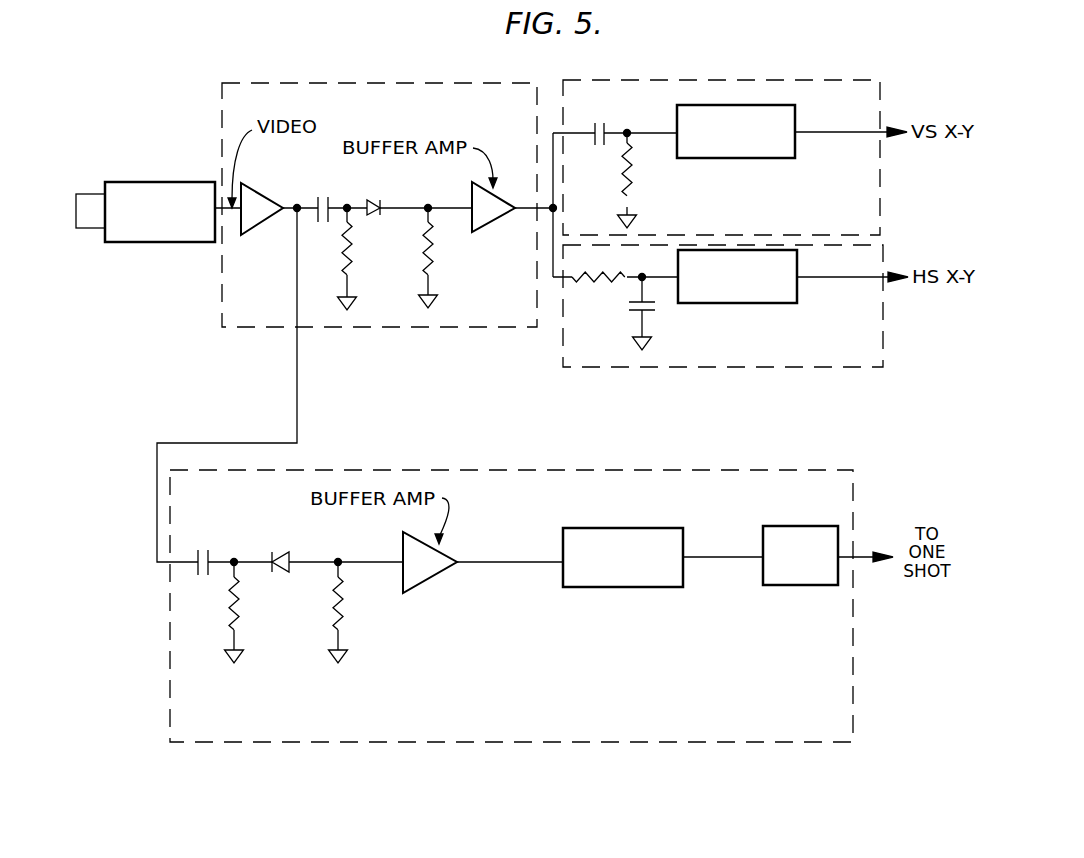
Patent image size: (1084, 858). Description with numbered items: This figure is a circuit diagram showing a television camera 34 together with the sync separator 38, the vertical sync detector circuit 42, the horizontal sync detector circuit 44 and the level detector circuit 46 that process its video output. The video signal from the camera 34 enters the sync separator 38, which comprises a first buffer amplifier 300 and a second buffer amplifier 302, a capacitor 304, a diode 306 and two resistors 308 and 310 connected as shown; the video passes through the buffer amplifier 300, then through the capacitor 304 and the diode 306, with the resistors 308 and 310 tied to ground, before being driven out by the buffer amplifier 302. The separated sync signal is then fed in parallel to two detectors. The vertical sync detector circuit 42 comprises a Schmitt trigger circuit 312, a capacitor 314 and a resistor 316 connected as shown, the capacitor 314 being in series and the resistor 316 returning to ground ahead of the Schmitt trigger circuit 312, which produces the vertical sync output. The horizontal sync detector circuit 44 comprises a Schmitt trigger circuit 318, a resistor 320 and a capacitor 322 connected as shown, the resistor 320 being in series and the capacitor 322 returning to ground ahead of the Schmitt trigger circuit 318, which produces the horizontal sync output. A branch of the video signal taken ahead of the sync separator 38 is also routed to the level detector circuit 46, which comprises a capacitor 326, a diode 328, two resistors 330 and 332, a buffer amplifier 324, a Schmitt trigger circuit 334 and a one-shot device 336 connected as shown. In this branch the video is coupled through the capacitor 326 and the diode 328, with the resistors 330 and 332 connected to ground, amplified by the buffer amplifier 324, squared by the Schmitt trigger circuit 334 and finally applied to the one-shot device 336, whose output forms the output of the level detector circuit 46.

The camera 34 is at (167, 182).
The sync separator 38 is at (303, 88).
The vertical sync detector circuit 42 is at (838, 93).
The horizontal sync detector circuit 44 is at (883, 343).
The level detector circuit 46 is at (763, 480).
The buffer amplifier 300 is at (263, 220).
The buffer amplifier 302 is at (497, 215).
The capacitor 304 is at (318, 223).
The diode 306 is at (373, 200).
The resistor 308 is at (351, 278).
The resistor 310 is at (436, 276).
The Schmitt trigger circuit 312 is at (797, 140).
The capacitor 314 is at (593, 142).
The resistor 316 is at (632, 187).
The Schmitt trigger circuit 318 is at (799, 283).
The resistor 320 is at (593, 283).
The capacitor 322 is at (633, 315).
The buffer amplifier 324 is at (443, 573).
The capacitor 326 is at (197, 577).
The diode 328 is at (277, 552).
The resistor 330 is at (239, 630).
The resistor 332 is at (344, 633).
The Schmitt trigger circuit 334 is at (590, 587).
The one-shot device 336 is at (785, 585).